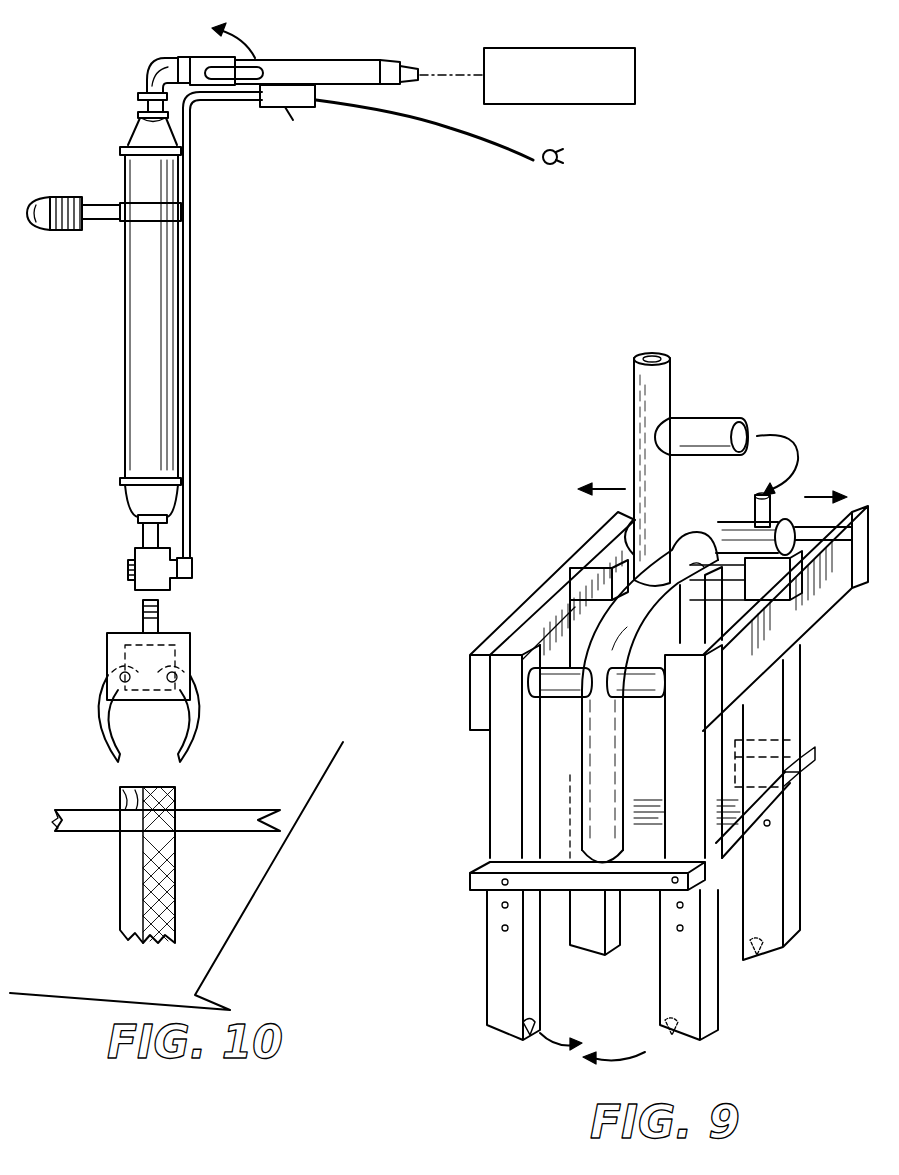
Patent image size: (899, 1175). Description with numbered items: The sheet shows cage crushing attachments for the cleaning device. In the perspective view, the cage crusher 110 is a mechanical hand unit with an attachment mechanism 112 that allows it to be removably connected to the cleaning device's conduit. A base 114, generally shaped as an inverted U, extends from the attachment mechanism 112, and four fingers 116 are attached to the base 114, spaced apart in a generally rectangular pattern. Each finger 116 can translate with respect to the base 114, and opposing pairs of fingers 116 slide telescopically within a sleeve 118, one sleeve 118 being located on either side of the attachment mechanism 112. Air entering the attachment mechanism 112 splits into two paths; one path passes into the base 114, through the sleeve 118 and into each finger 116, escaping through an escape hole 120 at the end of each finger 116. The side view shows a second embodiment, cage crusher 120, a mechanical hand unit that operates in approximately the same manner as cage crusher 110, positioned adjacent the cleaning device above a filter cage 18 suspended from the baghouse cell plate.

In FIG. 9, the cage crusher 110 is at (462, 942).
In FIG. 9, the attachment mechanism 112 is at (693, 425).
In FIG. 9, the base 114 is at (620, 625).
In FIG. 9, the fingers 116 is at (508, 790).
In FIG. 9, the sleeve 118 is at (733, 527).
In FIG. 10, the escape hole / cage crusher 120 is at (208, 683).
In FIG. 9, the escape hole / cage crusher 120 is at (528, 1025).
In FIG. 10, the filter cage 18 is at (175, 871).